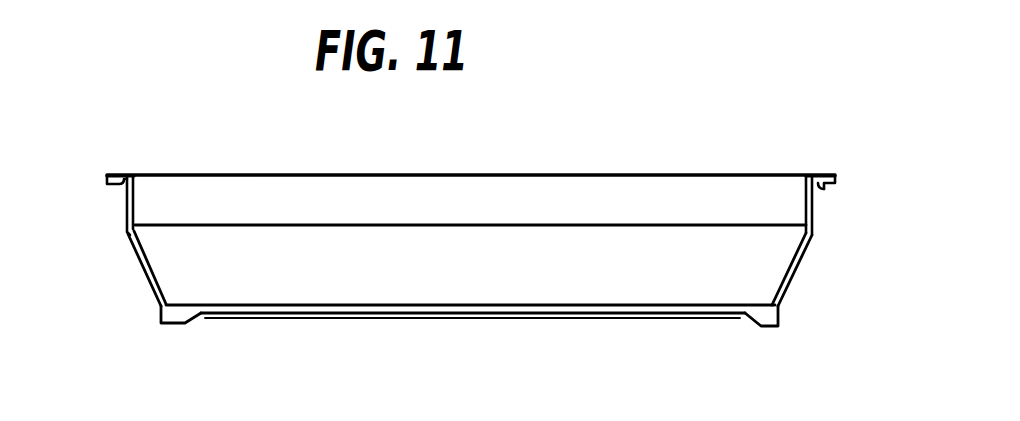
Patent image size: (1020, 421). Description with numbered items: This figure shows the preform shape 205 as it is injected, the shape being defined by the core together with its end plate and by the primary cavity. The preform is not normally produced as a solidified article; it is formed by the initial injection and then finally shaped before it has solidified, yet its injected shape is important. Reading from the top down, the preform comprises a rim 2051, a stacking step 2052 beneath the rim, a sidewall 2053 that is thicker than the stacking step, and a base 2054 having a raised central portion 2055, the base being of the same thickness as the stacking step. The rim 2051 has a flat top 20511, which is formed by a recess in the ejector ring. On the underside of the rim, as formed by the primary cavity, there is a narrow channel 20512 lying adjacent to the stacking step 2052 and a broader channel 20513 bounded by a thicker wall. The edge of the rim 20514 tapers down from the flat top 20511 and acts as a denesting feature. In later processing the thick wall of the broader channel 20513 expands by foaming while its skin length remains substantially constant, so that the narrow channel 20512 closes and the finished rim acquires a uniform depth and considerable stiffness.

The preform shape 205 is at (512, 193).
The rim 2051 is at (818, 177).
The flat top 20511 is at (128, 172).
The narrow channel 20512 is at (126, 184).
The broader channel 20513 is at (826, 190).
The edge of the rim 20514 is at (107, 176).
The stacking step 2052 is at (813, 222).
The sidewall 2053 is at (800, 266).
The base 2054 is at (763, 327).
The raised central portion 2055 is at (535, 320).